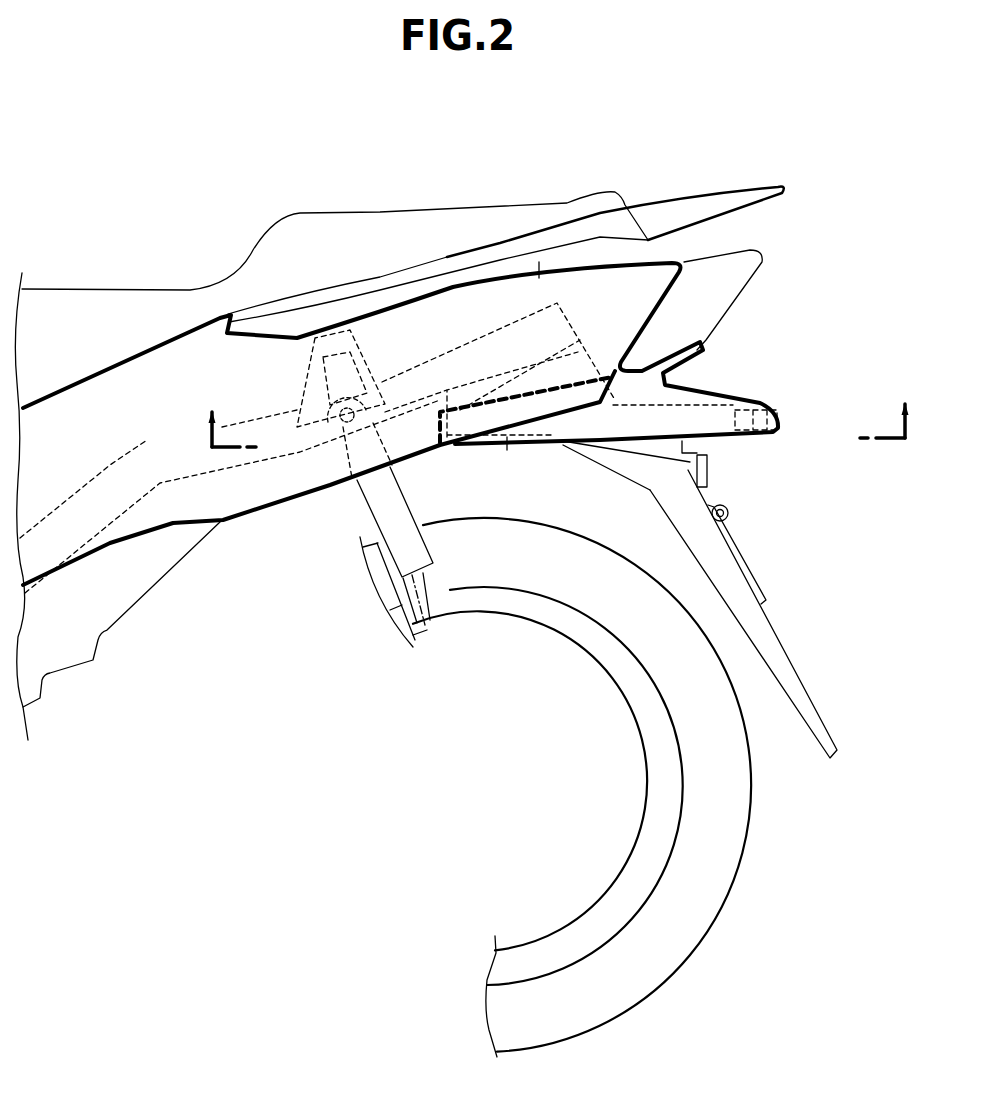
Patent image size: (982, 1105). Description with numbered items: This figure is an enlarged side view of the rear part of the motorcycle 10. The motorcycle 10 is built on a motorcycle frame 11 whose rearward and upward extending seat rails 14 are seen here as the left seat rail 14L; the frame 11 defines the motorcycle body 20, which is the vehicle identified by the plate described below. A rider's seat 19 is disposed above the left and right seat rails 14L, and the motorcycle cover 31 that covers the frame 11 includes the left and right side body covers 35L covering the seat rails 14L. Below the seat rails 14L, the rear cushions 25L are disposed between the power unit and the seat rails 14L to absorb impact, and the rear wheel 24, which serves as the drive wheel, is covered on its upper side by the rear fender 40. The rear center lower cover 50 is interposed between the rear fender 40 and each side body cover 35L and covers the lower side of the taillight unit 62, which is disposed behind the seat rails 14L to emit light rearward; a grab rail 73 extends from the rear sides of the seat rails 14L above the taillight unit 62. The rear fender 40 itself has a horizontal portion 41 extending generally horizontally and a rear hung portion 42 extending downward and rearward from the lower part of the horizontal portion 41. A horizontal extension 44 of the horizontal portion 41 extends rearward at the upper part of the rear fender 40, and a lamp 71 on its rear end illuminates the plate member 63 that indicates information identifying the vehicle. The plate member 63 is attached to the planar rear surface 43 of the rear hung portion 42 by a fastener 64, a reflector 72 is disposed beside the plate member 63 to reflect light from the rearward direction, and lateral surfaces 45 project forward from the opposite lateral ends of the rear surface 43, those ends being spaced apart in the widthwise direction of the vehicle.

The motorcycle 10 is at (115, 92).
The motorcycle frame 11 is at (110, 462).
The seat rails 14 is at (536, 409).
The left seat rail 14L is at (248, 420).
The rider's seat 19 is at (257, 247).
The motorcycle body 20 is at (167, 380).
The rear wheel 24 is at (663, 983).
The left rear cushion 25L is at (360, 505).
The motorcycle cover 31 is at (385, 306).
The left side body cover 35L is at (430, 303).
The rear fender 40 is at (788, 644).
The horizontal portion 41 is at (507, 442).
The rear hung portion 42 is at (785, 692).
The rear surface 43 is at (707, 495).
The horizontal extension 44 is at (692, 405).
The lateral surfaces 45 is at (668, 480).
The rear center lower cover 50 is at (735, 395).
The taillight unit 62 is at (760, 253).
The plate member 63 is at (755, 573).
The fastener 64 is at (728, 514).
The lamp 71 is at (762, 436).
The reflector 72 is at (708, 470).
The grab rail 73 is at (712, 188).